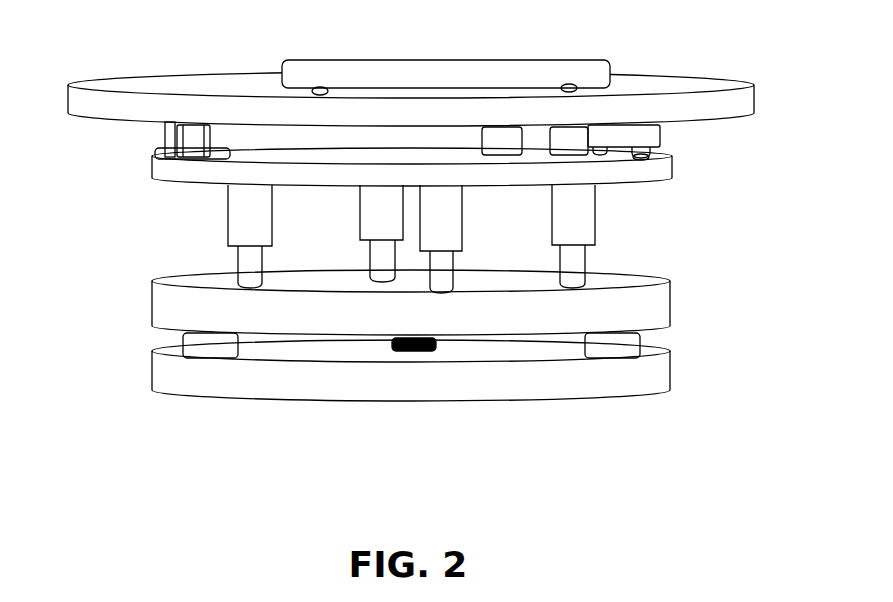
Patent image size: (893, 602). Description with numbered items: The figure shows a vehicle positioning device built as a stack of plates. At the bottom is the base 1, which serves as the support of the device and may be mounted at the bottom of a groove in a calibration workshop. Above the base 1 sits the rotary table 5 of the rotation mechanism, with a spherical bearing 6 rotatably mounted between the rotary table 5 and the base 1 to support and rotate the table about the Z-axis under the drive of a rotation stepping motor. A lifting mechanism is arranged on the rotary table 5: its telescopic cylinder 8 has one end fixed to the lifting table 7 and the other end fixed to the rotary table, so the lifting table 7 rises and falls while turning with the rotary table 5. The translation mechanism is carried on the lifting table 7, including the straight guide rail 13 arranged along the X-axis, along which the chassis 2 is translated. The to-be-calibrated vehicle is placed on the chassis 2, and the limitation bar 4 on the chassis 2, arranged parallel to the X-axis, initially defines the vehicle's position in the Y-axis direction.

The base 1 is at (540, 393).
The chassis 2 is at (688, 112).
The limitation bar 4 is at (518, 72).
The rotary table 5 is at (222, 315).
The spherical bearing 6 is at (600, 348).
The lifting table 7 is at (207, 173).
The telescopic cylinder 8 is at (252, 230).
The straight guide rail 13 is at (247, 135).